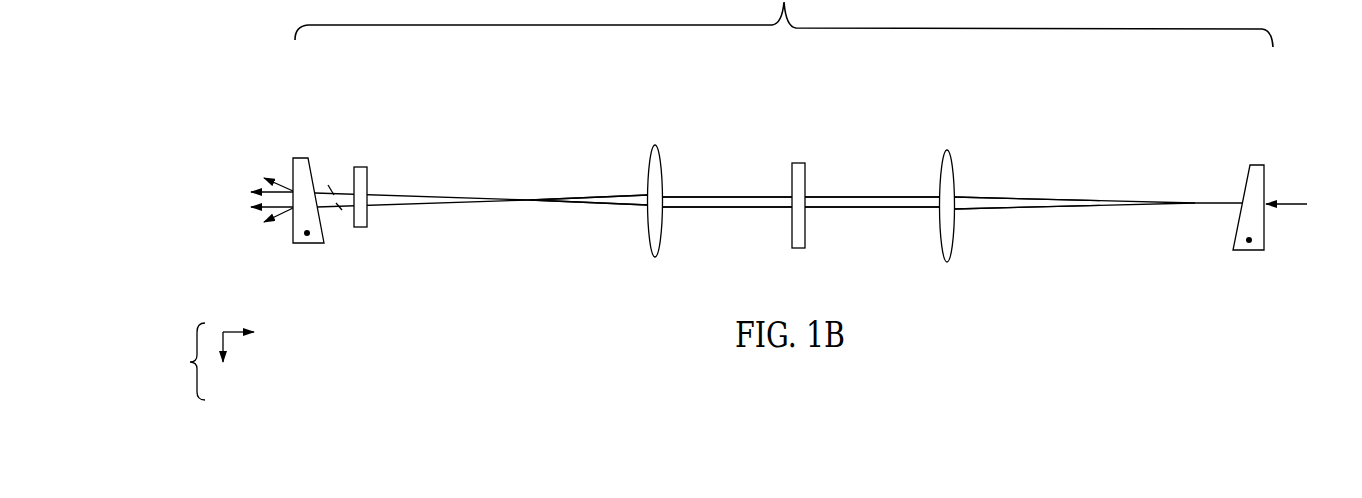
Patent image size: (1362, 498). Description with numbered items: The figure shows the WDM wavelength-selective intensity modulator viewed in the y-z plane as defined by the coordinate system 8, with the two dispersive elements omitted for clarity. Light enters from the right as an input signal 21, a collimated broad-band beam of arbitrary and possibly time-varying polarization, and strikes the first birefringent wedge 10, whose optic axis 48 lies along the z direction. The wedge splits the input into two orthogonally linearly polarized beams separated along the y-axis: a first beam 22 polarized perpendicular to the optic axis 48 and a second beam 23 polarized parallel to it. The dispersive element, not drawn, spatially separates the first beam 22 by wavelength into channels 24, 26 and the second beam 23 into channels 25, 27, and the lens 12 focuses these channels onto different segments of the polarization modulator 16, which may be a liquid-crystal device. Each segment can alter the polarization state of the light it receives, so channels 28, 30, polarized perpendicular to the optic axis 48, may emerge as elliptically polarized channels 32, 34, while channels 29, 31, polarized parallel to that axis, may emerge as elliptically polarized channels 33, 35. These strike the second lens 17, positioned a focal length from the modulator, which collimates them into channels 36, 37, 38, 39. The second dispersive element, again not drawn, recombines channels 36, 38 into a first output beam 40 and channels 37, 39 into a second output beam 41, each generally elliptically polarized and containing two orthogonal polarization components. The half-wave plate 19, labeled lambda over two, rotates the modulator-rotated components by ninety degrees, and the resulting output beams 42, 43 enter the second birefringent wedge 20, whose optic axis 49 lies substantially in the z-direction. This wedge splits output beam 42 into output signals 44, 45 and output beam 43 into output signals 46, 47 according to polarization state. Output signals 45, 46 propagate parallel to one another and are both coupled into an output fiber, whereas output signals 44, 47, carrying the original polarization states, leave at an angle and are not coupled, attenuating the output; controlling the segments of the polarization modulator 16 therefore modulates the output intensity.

The coordinate system 8 is at (229, 362).
The first birefringent wedge 10 is at (1249, 230).
The lens 12 is at (956, 194).
The polarization modulator 16 is at (802, 190).
The second lens 17 is at (661, 190).
The half-wave plate 19 is at (362, 222).
The second birefringent wedge 20 is at (306, 186).
The input signal 21 is at (1295, 191).
The first beam 22 is at (1171, 189).
The second beam 23 is at (1147, 217).
The channel 24 is at (1027, 185).
The channel 25 is at (1027, 222).
The channel 26 is at (1027, 185).
The channel 27 is at (1027, 222).
The channel 28 is at (872, 183).
The channel 29 is at (872, 222).
The channel 30 is at (872, 183).
The channel 31 is at (872, 222).
The elliptically polarized channel 32 is at (727, 183).
The elliptically polarized channel 33 is at (727, 222).
The elliptically polarized channel 34 is at (727, 183).
The elliptically polarized channel 35 is at (727, 222).
The collimated channel 36 is at (589, 185).
The collimated channel 37 is at (589, 216).
The collimated channel 38 is at (589, 185).
The collimated channel 39 is at (589, 216).
The first output beam 40 is at (423, 216).
The second output beam 41 is at (422, 184).
The output beam 42 is at (339, 208).
The output beam 43 is at (332, 190).
The output signal 44 is at (252, 171).
The output signal 45 is at (252, 190).
The output signal 46 is at (252, 213).
The output signal 47 is at (252, 229).
The optic axis 48 is at (1252, 242).
The optic axis 49 is at (303, 245).